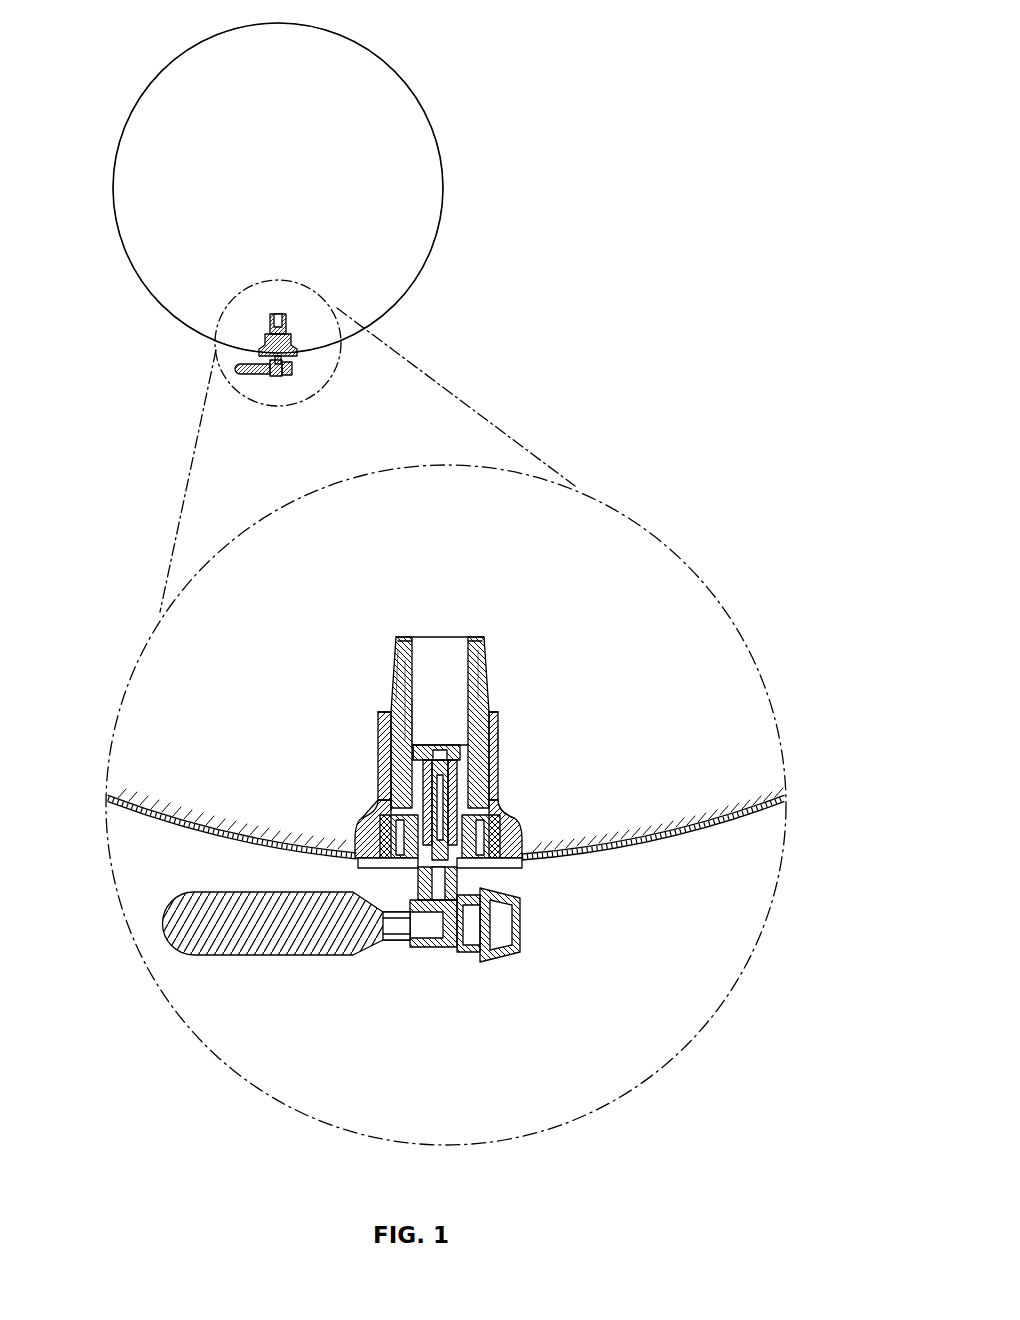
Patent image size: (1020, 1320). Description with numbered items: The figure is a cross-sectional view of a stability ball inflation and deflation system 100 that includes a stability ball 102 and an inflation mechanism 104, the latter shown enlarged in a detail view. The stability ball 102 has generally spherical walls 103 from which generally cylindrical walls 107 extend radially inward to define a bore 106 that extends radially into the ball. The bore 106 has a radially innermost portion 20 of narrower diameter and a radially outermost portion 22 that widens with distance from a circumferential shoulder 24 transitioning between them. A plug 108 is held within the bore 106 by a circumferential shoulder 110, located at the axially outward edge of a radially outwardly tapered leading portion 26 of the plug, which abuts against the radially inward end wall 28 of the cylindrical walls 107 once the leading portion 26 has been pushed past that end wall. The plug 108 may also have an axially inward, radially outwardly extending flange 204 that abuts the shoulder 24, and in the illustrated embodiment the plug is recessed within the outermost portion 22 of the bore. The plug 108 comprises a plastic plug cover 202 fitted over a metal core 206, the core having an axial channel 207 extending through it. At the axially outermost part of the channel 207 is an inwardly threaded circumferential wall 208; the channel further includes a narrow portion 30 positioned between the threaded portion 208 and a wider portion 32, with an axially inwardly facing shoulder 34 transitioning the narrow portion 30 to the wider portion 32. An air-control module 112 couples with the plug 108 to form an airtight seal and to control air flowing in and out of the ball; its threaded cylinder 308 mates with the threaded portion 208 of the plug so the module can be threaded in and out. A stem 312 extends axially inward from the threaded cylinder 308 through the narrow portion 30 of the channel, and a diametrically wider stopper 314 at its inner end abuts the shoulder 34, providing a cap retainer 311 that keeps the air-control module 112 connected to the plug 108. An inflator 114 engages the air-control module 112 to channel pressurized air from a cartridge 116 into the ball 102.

The stability ball inflation and deflation system 100 is at (150, 34).
The stability ball 102 is at (132, 135).
The generally spherical walls 103 is at (598, 848).
The inflation mechanism 104 is at (291, 389).
The bore 106 is at (375, 815).
The generally cylindrical walls 107 is at (508, 803).
The plug 108 is at (474, 662).
The circumferential shoulder 110 is at (498, 720).
The air-control module 112 is at (385, 805).
The inflator 114 is at (442, 950).
The cartridge 116 is at (278, 957).
The radially innermost portion 20 is at (498, 738).
The radially outermost portion 22 is at (358, 850).
The circumferential shoulder 24 is at (515, 840).
The radially outwardly tapered leading portion 26 is at (478, 697).
The radially inward end wall 28 is at (493, 713).
The narrow portion 30 is at (473, 775).
The wider portion 32 is at (466, 724).
The axially inwardly facing shoulder 34 is at (380, 722).
The plastic plug cover 202 is at (392, 692).
The radially outwardly extending flange 204 is at (380, 830).
The metal core 206 is at (395, 676).
The axial channel 207 is at (418, 745).
The inwardly threaded circumferential wall 208 is at (410, 868).
The threaded cylinder 308 is at (470, 868).
The cap retainer 311 is at (392, 706).
The stem 312 is at (385, 790).
The stopper 314 is at (395, 693).